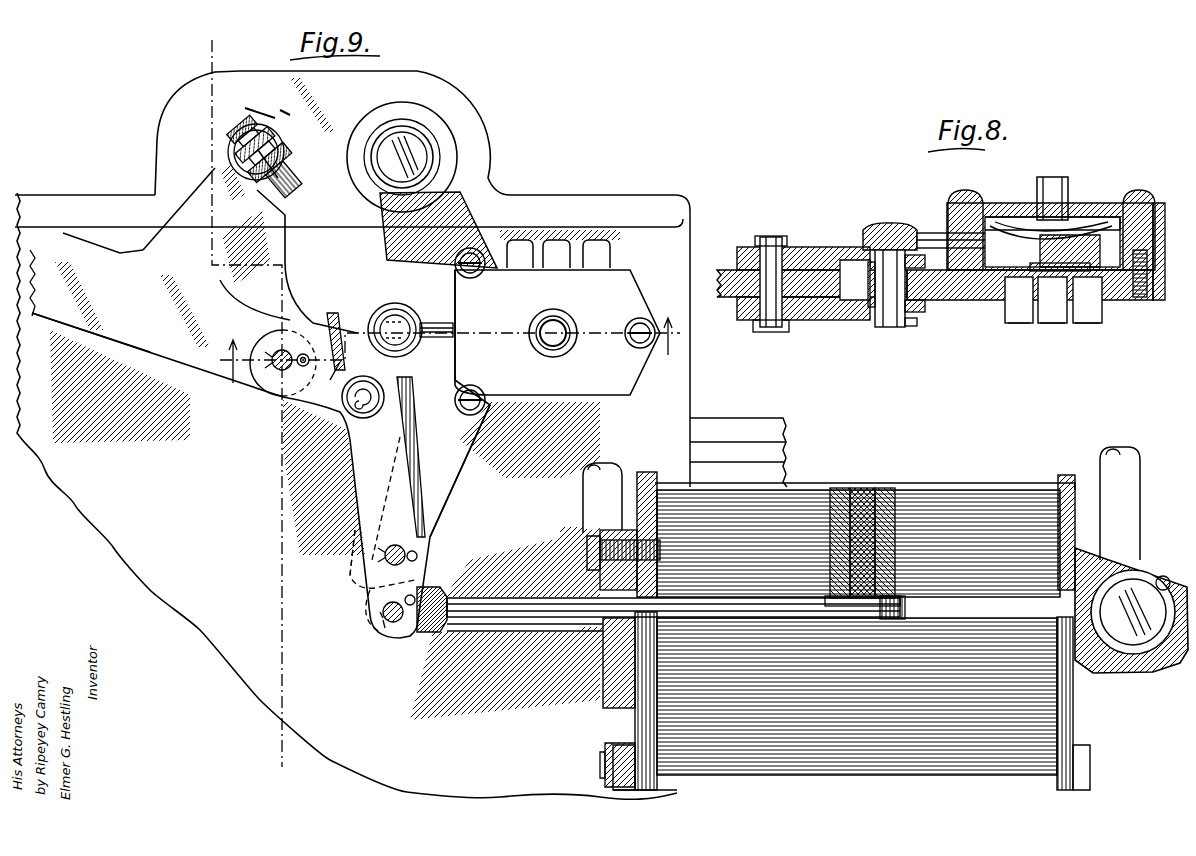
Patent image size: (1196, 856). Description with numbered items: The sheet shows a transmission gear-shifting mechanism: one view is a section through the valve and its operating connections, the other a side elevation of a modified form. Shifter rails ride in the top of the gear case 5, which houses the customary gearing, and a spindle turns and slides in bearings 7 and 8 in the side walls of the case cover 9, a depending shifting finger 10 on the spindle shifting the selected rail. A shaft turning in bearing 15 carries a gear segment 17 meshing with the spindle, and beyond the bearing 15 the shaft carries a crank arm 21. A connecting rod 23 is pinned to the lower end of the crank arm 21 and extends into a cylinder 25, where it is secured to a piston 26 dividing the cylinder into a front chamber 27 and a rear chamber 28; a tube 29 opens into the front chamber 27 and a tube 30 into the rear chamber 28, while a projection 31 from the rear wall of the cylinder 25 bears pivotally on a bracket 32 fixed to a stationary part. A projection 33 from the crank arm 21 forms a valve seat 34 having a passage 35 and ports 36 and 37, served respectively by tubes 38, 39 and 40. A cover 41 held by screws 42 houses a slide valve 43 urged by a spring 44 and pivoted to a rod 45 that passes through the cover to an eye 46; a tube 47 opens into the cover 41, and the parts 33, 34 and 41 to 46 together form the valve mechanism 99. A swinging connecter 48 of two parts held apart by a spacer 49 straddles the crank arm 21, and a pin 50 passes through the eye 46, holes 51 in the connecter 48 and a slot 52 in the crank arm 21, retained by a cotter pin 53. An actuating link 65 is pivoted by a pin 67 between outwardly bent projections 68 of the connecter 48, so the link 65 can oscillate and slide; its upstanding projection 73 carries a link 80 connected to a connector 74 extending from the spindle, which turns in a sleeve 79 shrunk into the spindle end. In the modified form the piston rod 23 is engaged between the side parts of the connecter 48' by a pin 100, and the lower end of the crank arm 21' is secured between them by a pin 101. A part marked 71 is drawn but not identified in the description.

In FIG. 9, the gear case 5 is at (678, 257).
In FIG. 8, the gear case 5 is at (690, 245).
In FIG. 9, the bearing 7 is at (238, 135).
In FIG. 9, the bearing 8 is at (450, 366).
In FIG. 9, the case cover 9 is at (460, 108).
In FIG. 9, the shifting finger 10 is at (225, 57).
In FIG. 9, the bearing 15 is at (412, 118).
In FIG. 9, the gear segment 17 is at (420, 157).
In FIG. 9, the crank arm 21 is at (460, 471).
In FIG. 8, the crank arm 21 is at (1041, 272).
In FIG. 9, the crank arm 21' is at (390, 415).
In FIG. 9, the connecting rod 23 is at (465, 600).
In FIG. 9, the cylinder 25 is at (870, 765).
In FIG. 9, the piston 26 is at (862, 494).
In FIG. 9, the front chamber 27 is at (785, 503).
In FIG. 9, the rear chamber 28 is at (950, 500).
In FIG. 9, the tube 29 is at (583, 488).
In FIG. 9, the tube 30 is at (1135, 484).
In FIG. 9, the projection 31 is at (1090, 672).
In FIG. 9, the bracket 32 is at (1138, 655).
In FIG. 8, the projection 33 is at (975, 300).
In FIG. 8, the valve seat 34 is at (1060, 261).
In FIG. 8, the passage 35 is at (1052, 300).
In FIG. 8, the port 36 is at (1019, 300).
In FIG. 8, the port 37 is at (1087, 300).
In FIG. 9, the tube 38 is at (554, 262).
In FIG. 8, the tube 38 is at (1052, 323).
In FIG. 9, the tube 39 is at (518, 262).
In FIG. 8, the tube 39 is at (1015, 323).
In FIG. 9, the tube 40 is at (596, 262).
In FIG. 8, the tube 40 is at (1088, 323).
In FIG. 8, the cover 41 is at (1095, 215).
In FIG. 9, the screws 42 is at (472, 278).
In FIG. 8, the screws 42 is at (1053, 231).
In FIG. 8, the slide valve 43 is at (1078, 246).
In FIG. 8, the spring 44 is at (1022, 230).
In FIG. 9, the rod 45 is at (438, 338).
In FIG. 9, the eye 46 is at (400, 312).
In FIG. 8, the eye 46 is at (890, 230).
In FIG. 8, the tube 47 is at (1055, 182).
In FIG. 9, the swinging connecter 48 is at (352, 552).
In FIG. 8, the swinging connecter 48 is at (850, 282).
In FIG. 9, the connecter 48' is at (372, 581).
In FIG. 9, the spacer 49 is at (366, 416).
In FIG. 9, the pin 50 is at (420, 318).
In FIG. 8, the pin 50 is at (886, 328).
In FIG. 8, the holes 51 is at (923, 283).
In FIG. 9, the slot 52 is at (339, 371).
In FIG. 8, the slot 52 is at (870, 300).
In FIG. 8, the cotter pin 53 is at (910, 326).
In FIG. 9, the actuating link 65 is at (185, 365).
In FIG. 8, the actuating link 65 is at (720, 283).
In FIG. 9, the pin 67 is at (278, 372).
In FIG. 8, the pin 67 is at (770, 240).
In FIG. 9, the projections 68 is at (270, 333).
In FIG. 8, the projections 68 is at (740, 250).
In FIG. 9, the opening 71 is at (633, 298).
In FIG. 9, the projection 73 is at (210, 190).
In FIG. 9, the connector 74 is at (275, 160).
In FIG. 8, the connector 74 is at (1051, 206).
In FIG. 9, the sleeve 79 is at (228, 138).
In FIG. 9, the link 80 is at (275, 172).
In FIG. 9, the valve mechanism 99 is at (590, 385).
In FIG. 8, the valve mechanism 99 is at (1163, 258).
In FIG. 9, the pin 100 is at (395, 625).
In FIG. 9, the pin 101 is at (385, 560).